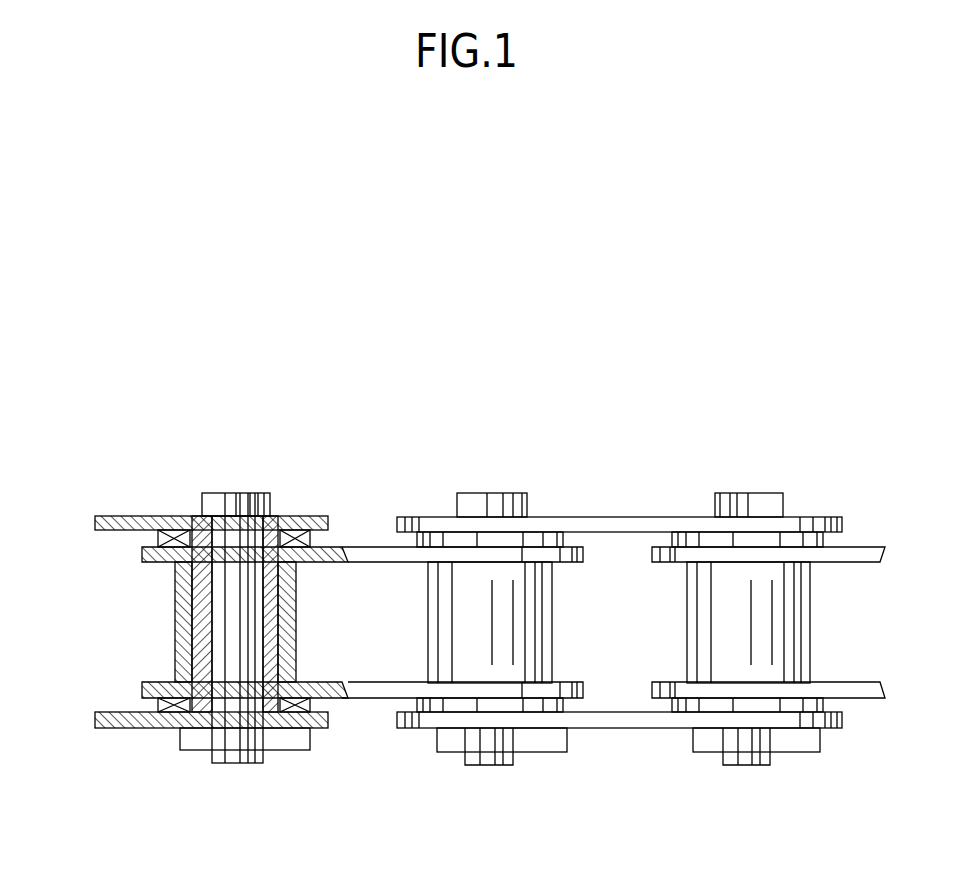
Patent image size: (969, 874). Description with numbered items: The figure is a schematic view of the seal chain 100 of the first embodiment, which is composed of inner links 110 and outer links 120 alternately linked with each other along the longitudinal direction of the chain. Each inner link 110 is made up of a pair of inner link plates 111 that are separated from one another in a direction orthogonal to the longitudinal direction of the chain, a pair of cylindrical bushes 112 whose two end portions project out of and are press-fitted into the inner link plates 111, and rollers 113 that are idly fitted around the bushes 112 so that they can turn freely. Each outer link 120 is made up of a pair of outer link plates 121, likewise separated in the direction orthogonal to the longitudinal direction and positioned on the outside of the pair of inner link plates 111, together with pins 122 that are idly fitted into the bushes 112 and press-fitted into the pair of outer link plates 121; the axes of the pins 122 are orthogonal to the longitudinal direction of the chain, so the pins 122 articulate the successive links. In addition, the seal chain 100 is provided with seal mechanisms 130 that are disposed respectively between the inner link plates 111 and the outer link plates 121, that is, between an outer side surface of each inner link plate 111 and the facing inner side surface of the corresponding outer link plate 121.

The seal chain 100 is at (459, 462).
The inner link 110 is at (377, 702).
The inner link plate 111 is at (363, 547).
The cylindrical bush 112 is at (180, 640).
The roller 113 is at (545, 638).
The outer link 120 is at (692, 514).
The outer link plate 121 is at (143, 513).
The pin 122 is at (248, 493).
The seal mechanism 130 is at (152, 535).